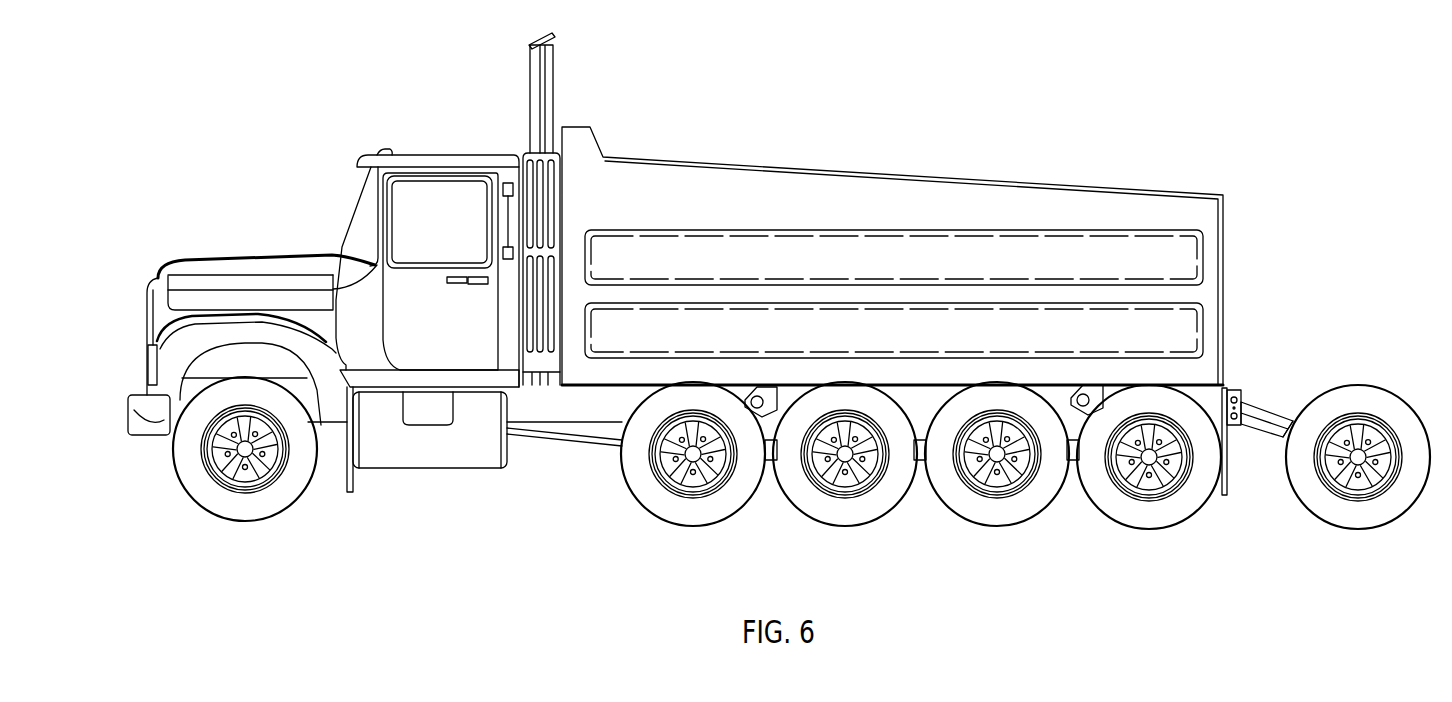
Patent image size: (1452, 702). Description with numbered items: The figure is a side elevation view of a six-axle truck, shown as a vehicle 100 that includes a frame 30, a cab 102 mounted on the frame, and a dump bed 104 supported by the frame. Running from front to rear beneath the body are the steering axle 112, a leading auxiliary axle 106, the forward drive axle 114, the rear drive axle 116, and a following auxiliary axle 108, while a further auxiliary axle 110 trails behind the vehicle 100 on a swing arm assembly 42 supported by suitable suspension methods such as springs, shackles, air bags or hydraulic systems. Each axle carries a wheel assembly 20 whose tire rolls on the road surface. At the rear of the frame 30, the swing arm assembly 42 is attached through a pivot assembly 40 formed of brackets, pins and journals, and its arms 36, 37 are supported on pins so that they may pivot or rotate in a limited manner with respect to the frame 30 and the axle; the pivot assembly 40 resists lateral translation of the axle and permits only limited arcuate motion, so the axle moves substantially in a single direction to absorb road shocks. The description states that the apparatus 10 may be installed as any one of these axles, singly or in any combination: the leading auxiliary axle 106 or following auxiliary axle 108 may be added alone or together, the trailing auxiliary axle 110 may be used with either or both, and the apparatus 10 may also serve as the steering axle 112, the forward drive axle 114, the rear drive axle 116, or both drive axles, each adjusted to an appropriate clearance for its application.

The apparatus 10 is at (1327, 358).
The wheel assembly 20 is at (1401, 398).
The frame 30 is at (540, 403).
The arm 36 is at (1255, 420).
The arm 37 is at (1257, 433).
The pivot assembly 40 is at (1242, 400).
The swing arm assembly 42 is at (1274, 400).
The vehicle 100 is at (330, 237).
The cab 102 is at (440, 146).
The bed 104 is at (828, 164).
The leading auxiliary axle 106 is at (692, 531).
The following auxiliary axle 108 is at (1152, 539).
The auxiliary axle 110 is at (1370, 539).
The steering axle 112 is at (267, 530).
The forward drive axle 114 is at (851, 532).
The rear drive axle 116 is at (1000, 534).